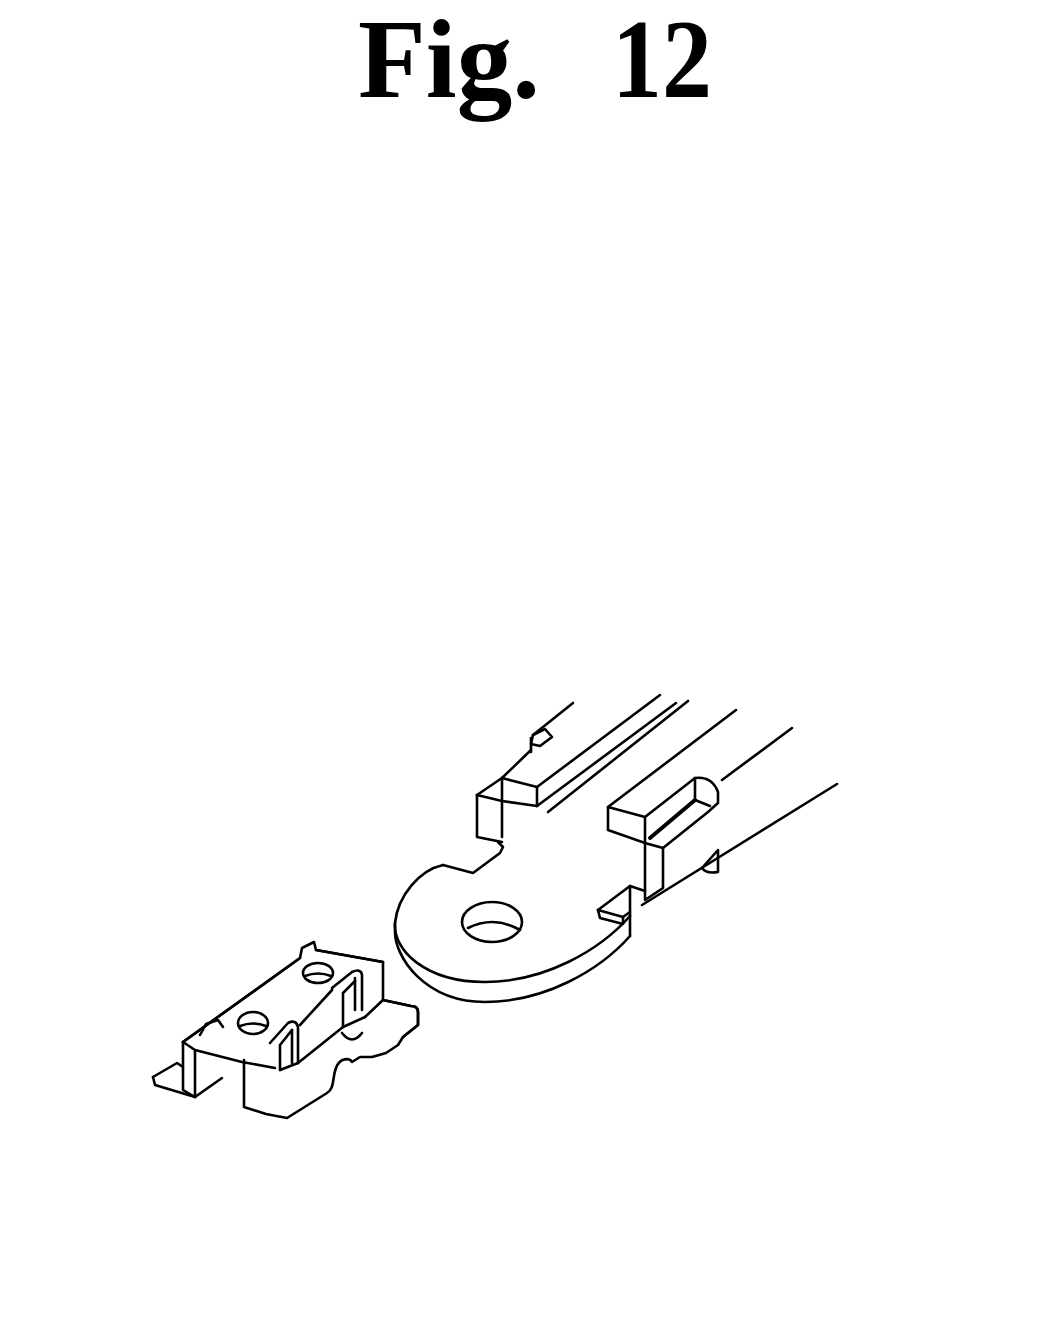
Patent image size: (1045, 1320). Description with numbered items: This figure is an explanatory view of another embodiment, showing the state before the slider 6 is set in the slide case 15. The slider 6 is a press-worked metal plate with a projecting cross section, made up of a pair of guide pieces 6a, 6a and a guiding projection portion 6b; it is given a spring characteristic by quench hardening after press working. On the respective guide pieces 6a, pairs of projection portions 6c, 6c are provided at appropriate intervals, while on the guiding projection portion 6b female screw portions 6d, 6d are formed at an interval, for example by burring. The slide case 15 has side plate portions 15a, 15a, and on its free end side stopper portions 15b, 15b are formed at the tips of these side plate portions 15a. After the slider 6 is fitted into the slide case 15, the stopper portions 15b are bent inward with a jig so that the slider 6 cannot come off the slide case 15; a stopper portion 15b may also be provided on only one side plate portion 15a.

The slider 6 is at (222, 1098).
The guide piece 6a is at (173, 1067).
The guiding projection portion 6b is at (277, 985).
The projection portion 6c is at (390, 1051).
The female screw portion 6d is at (320, 960).
The slide case 15 is at (799, 805).
The side plate portion 15a is at (530, 742).
The stopper portion 15b is at (480, 817).